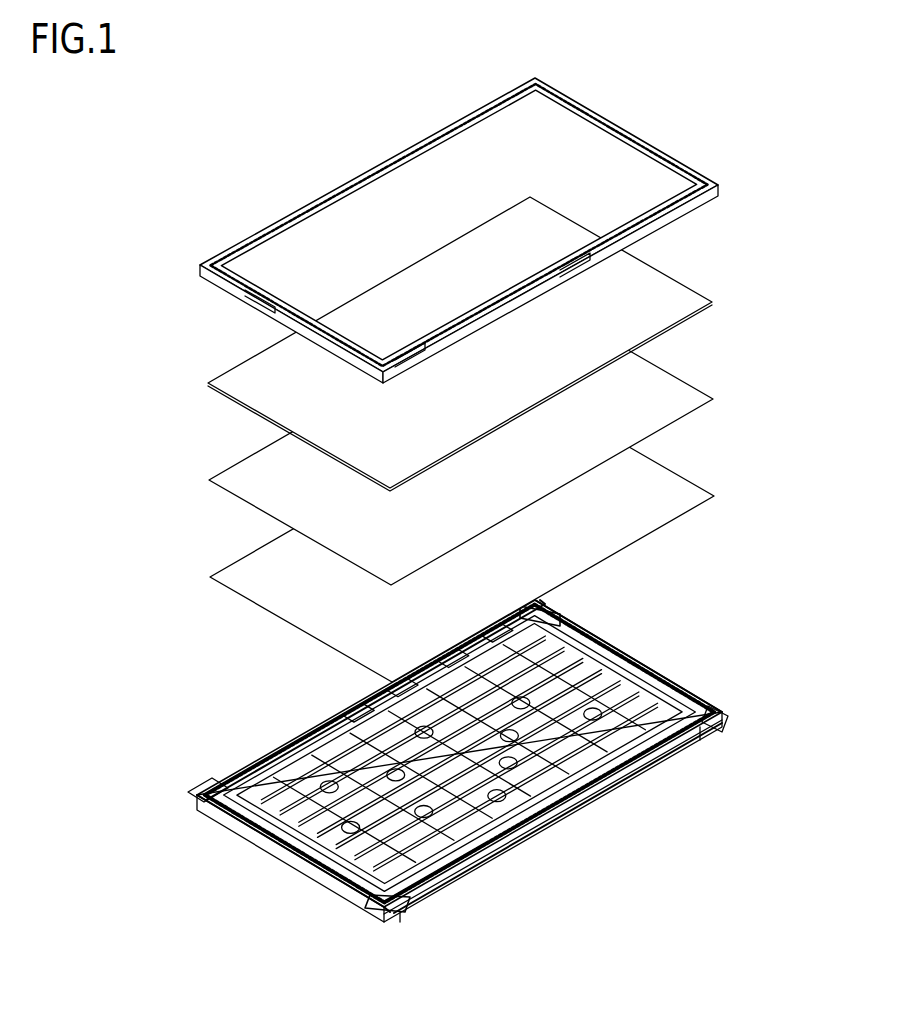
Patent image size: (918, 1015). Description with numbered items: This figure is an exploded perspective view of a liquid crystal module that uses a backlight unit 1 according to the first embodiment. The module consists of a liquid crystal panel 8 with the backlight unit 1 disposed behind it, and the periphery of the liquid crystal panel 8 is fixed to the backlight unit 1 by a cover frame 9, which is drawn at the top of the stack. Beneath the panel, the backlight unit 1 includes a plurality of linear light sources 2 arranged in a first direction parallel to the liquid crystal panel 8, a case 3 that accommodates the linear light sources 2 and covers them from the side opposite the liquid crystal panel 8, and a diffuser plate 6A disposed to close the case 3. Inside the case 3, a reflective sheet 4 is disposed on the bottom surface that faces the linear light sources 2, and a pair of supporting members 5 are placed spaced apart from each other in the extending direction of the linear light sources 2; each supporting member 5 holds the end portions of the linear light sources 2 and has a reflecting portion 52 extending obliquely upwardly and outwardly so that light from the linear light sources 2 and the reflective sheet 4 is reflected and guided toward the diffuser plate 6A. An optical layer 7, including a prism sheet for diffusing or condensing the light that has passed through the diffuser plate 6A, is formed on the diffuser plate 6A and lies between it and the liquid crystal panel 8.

The backlight unit 1 is at (786, 320).
The linear light sources 2 is at (626, 772).
The case 3 is at (672, 760).
The reflective sheet 4 is at (560, 832).
The supporting members 5 is at (660, 678).
The reflecting portion 52 is at (600, 652).
The diffuser plate 6A is at (660, 497).
The optical layer 7 is at (663, 400).
The liquid crystal panel 8 is at (657, 302).
The cover frame 9 is at (330, 188).